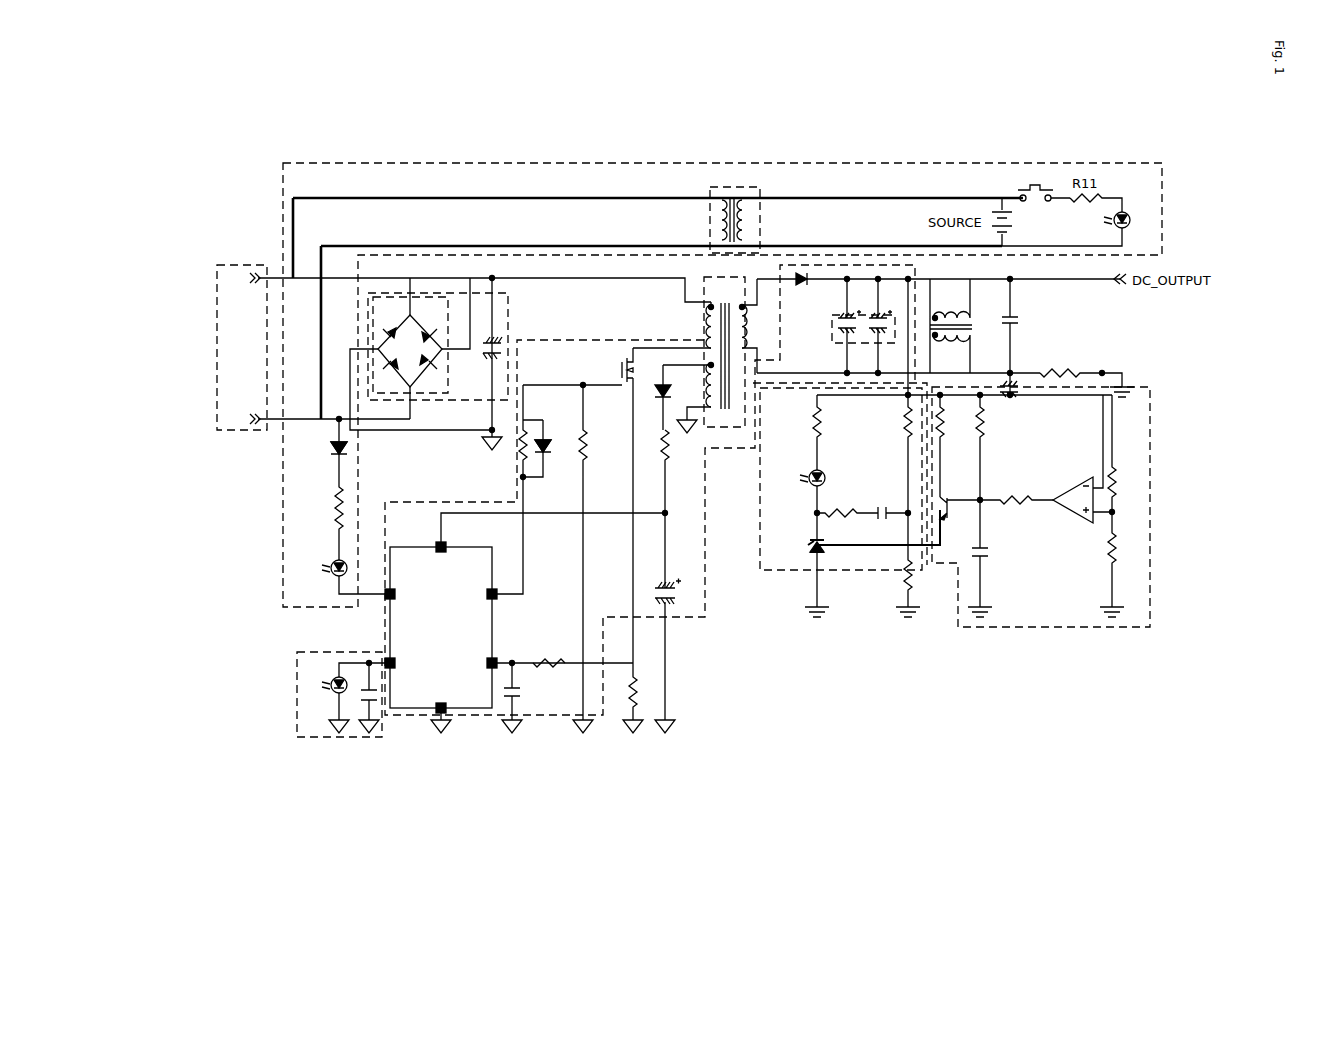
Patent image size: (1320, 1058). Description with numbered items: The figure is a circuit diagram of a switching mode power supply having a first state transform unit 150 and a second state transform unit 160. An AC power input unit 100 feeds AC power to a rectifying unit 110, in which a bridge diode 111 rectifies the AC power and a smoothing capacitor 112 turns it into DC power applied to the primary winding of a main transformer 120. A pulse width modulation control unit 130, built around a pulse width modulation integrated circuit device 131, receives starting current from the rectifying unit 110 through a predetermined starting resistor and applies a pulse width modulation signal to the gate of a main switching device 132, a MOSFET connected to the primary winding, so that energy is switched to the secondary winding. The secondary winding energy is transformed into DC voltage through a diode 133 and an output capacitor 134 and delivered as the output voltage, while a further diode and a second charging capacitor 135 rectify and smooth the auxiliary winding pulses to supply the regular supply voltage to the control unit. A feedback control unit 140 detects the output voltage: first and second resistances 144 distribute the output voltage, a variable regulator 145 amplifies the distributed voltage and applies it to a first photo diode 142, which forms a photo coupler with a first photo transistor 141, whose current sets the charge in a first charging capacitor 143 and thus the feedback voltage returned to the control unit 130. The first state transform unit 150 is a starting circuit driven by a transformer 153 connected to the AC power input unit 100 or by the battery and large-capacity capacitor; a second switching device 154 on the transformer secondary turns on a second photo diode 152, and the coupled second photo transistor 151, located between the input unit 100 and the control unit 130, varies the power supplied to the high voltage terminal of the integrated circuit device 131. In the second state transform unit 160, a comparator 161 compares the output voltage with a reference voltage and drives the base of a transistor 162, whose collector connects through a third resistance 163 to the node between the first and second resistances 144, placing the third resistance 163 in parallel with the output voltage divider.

The alternating current (AC) power input unit 100 is at (217, 348).
The rectifying unit 110 is at (463, 293).
The bridge diode 111 is at (425, 297).
The smoothing capacitor 112 is at (492, 340).
The main transformer 120 is at (704, 275).
The pulse width modulation control unit 130 is at (705, 592).
The pulse width modulation integrated circuit device 131 is at (412, 543).
The main switching device 132 is at (630, 360).
The diode 133 is at (803, 268).
The output capacitor 134 is at (895, 318).
The second charging capacitor 135 is at (667, 600).
The feedback control unit 140 is at (350, 738).
The first photo transistor 141 is at (297, 660).
The first photo diode 142 is at (812, 470).
The first charging capacitor 143 is at (347, 656).
The first and second resistances 144 is at (858, 523).
The variable regulator 145 is at (822, 560).
The first state transform unit 150 is at (283, 518).
The second photo transistor 151 is at (317, 583).
The second photo diode 152 is at (1125, 212).
The transformer 153 is at (735, 187).
The second switching device 154 is at (1043, 190).
The second state transform unit 160 is at (1085, 530).
The comparator 161 is at (1115, 500).
The transistor 162 is at (948, 508).
The third resistance 163 is at (1060, 518).